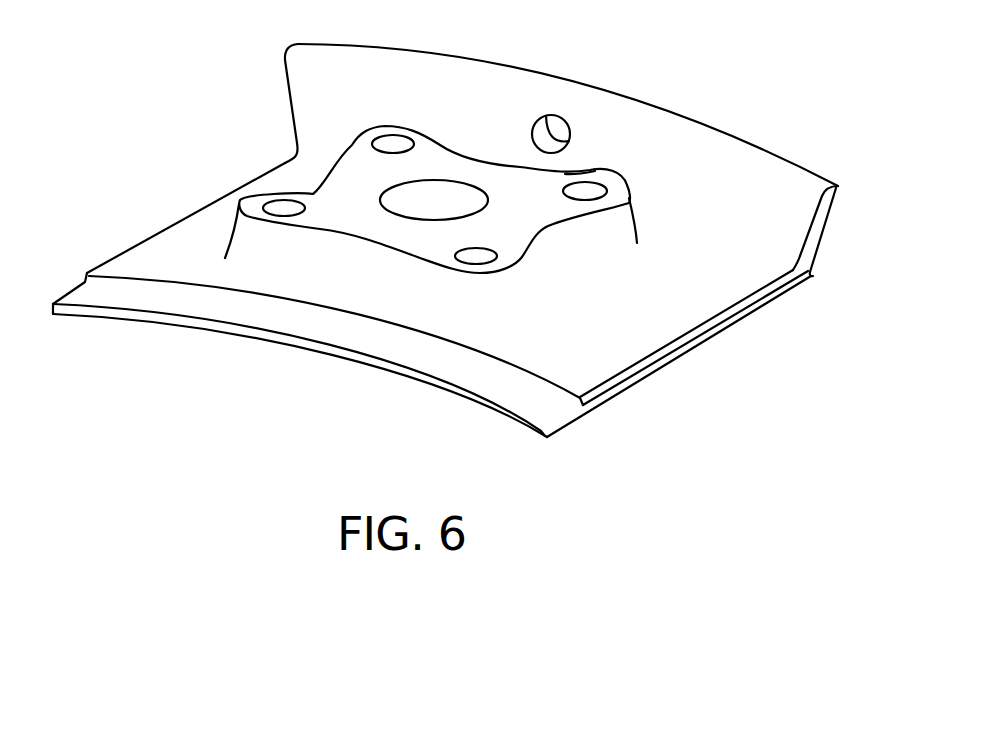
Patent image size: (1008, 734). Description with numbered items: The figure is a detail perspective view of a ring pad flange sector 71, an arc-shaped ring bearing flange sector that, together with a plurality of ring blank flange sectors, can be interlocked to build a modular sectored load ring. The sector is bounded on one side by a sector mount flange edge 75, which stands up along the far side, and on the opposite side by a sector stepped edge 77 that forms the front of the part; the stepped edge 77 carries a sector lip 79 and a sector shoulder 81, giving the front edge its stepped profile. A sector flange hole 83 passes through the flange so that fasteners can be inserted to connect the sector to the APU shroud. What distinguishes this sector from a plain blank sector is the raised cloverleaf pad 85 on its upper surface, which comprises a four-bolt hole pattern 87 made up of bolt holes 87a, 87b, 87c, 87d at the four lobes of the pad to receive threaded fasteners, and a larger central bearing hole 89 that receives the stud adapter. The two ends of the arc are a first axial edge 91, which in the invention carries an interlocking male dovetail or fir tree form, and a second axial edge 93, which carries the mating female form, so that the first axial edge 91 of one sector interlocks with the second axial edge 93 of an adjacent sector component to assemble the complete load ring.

The ring pad flange sector 71 is at (280, 378).
The sector mount flange edge 75 is at (821, 236).
The sector stepped edge 77 is at (456, 400).
The sector lip 79 is at (549, 394).
The sector shoulder 81 is at (208, 300).
The sector flange hole 83 is at (532, 128).
The raised cloverleaf pad 85 is at (594, 174).
The four-bolt hole pattern 87 is at (413, 117).
The bolt hole 87a is at (493, 267).
The bolt hole 87b is at (609, 190).
The bolt hole 87c is at (373, 134).
The bolt hole 87d is at (266, 199).
The bearing hole 89 is at (390, 212).
The first axial edge 91 is at (702, 350).
The second axial edge 93 is at (133, 244).